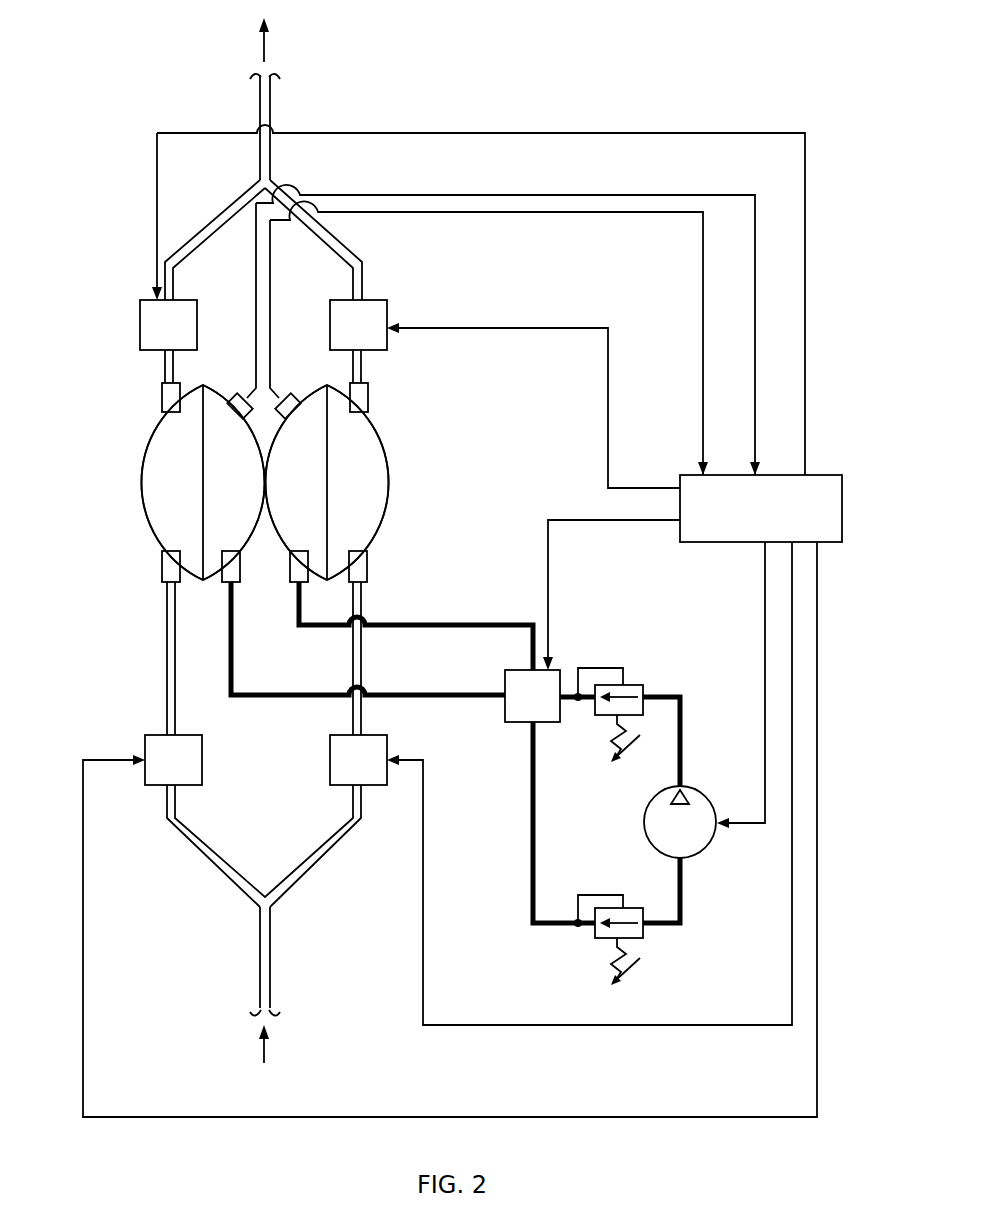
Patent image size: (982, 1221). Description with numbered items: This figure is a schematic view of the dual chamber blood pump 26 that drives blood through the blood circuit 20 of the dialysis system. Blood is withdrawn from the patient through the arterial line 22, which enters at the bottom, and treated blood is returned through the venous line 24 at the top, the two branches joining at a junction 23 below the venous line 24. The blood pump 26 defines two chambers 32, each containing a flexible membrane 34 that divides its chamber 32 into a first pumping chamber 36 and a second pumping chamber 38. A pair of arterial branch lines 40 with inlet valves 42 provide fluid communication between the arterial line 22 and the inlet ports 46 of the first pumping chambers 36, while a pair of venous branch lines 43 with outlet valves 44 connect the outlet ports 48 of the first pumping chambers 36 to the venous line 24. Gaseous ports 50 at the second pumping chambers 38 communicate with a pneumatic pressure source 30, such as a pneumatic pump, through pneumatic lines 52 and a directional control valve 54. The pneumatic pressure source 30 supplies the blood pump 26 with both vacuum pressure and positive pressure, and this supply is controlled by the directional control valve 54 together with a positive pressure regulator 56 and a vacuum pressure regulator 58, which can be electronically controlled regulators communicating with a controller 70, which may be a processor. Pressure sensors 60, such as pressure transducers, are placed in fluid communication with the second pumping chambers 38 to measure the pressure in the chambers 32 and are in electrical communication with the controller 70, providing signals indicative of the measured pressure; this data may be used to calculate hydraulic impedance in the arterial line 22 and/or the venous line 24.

The blood circuit 20 is at (114, 226).
The arterial line 22 is at (262, 975).
The junction conduit 23 is at (272, 152).
The venous line 24 is at (270, 106).
The dual chamber blood pump 26 is at (244, 444).
The pneumatic pressure source 30 is at (720, 788).
The chamber 32 is at (143, 490).
The flexible membrane 34 is at (206, 405).
The first pumping chamber 36 is at (161, 476).
The second pumping chamber 38 is at (216, 476).
The arterial branch line 40 is at (167, 818).
The inlet valve 42 is at (150, 742).
The venous branch line 43 is at (360, 262).
The outlet valve 44 is at (142, 302).
The inlet port 46 is at (165, 562).
The outlet port 48 is at (165, 398).
The gaseous port 50 is at (238, 582).
The pneumatic line 52 is at (447, 623).
The directional control valve 54 is at (550, 688).
The positive pressure regulator 56 is at (642, 685).
The vacuum pressure regulator 58 is at (605, 943).
The pressure sensor 60 is at (243, 392).
The controller 70 is at (828, 475).